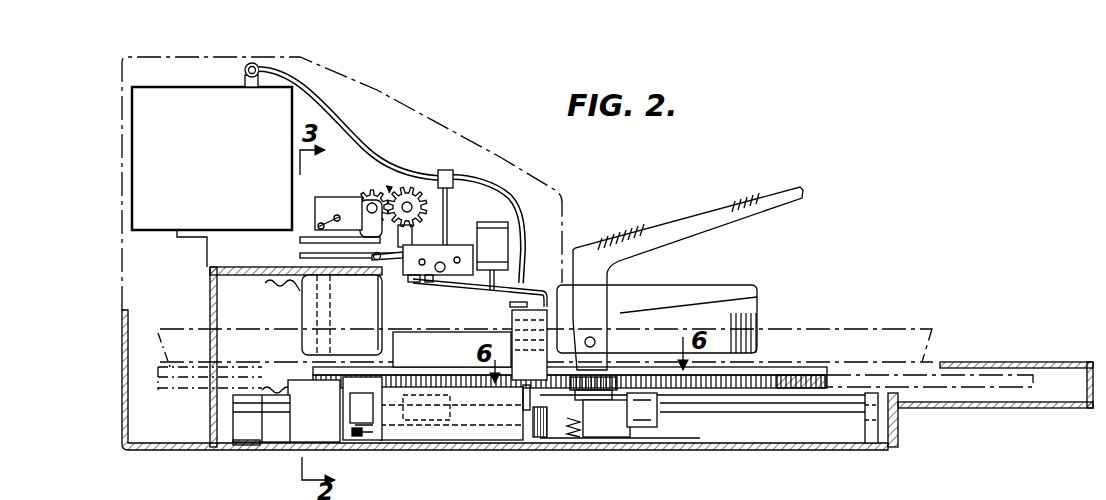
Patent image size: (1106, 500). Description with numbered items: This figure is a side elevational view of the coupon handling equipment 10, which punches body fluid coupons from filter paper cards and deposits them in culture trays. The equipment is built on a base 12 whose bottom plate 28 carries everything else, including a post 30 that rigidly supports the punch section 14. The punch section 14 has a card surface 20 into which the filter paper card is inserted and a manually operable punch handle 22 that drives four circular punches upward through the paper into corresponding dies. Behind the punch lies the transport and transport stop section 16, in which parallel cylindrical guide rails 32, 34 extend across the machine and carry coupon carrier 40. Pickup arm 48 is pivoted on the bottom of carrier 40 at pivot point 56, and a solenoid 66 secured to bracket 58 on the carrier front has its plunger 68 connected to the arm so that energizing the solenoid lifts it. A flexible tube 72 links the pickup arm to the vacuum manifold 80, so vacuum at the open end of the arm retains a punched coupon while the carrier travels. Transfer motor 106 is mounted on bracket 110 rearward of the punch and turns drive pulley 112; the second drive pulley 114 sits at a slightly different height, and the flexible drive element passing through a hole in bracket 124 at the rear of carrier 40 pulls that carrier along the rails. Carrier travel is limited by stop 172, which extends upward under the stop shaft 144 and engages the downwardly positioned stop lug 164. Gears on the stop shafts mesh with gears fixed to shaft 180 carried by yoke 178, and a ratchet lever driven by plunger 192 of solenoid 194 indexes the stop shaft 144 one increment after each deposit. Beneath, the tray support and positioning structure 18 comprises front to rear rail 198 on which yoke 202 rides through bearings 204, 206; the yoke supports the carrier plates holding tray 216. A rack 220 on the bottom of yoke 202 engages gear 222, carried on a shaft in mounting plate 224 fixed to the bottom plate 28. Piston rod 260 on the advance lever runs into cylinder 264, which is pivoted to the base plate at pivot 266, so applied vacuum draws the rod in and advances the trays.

The handling equipment 10 is at (712, 157).
The base 12 is at (772, 448).
The punch section 14 is at (619, 236).
The transport and transport stop section 16 is at (435, 160).
The tray support and positioning structure 18 is at (500, 443).
The card surface 20 is at (713, 294).
The punch handle 22 is at (748, 198).
The bottom plate 28 is at (705, 446).
The post 30 is at (547, 440).
The guide rail 32 is at (457, 264).
The guide rail 34 is at (422, 266).
The coupon carrier 40 is at (457, 246).
The pickup arm 48 is at (533, 288).
The pivot point 56 is at (414, 285).
The bracket 58 is at (492, 220).
The solenoid 66 is at (500, 243).
The plunger 68 is at (492, 292).
The flexible tube 72 is at (513, 193).
The vacuum manifold 80 is at (245, 70).
The transfer motor 106 is at (310, 313).
The bracket 110 is at (210, 308).
The drive pulley 112 is at (310, 239).
The drive pulley 114 is at (310, 255).
The bracket 124 is at (393, 258).
The stop shaft 144 is at (407, 186).
The stop lug 164 is at (410, 230).
The stop 172 is at (404, 236).
The yoke 178 is at (376, 196).
The shaft 180 is at (362, 202).
The plunger 192 is at (300, 336).
The solenoid 194 is at (300, 423).
The rail 198 is at (773, 407).
The yoke 202 is at (800, 370).
The bearing 204 is at (415, 453).
The bearing 206 is at (643, 428).
The tray 216 is at (456, 358).
The rack 220 is at (700, 380).
The gear 222 is at (602, 380).
The mounting plate 224 is at (593, 438).
The piston rod 260 is at (540, 418).
The cylinder 264 is at (408, 442).
The pivot 266 is at (357, 436).